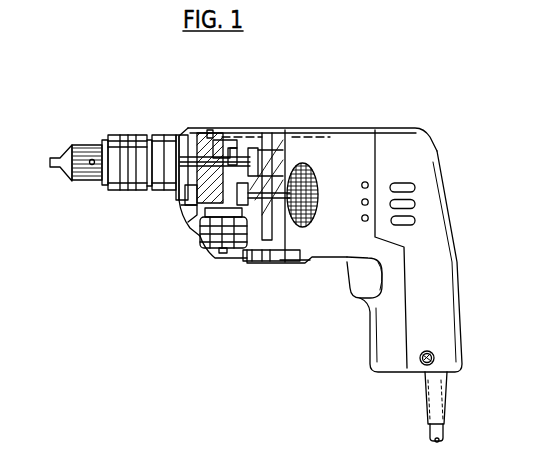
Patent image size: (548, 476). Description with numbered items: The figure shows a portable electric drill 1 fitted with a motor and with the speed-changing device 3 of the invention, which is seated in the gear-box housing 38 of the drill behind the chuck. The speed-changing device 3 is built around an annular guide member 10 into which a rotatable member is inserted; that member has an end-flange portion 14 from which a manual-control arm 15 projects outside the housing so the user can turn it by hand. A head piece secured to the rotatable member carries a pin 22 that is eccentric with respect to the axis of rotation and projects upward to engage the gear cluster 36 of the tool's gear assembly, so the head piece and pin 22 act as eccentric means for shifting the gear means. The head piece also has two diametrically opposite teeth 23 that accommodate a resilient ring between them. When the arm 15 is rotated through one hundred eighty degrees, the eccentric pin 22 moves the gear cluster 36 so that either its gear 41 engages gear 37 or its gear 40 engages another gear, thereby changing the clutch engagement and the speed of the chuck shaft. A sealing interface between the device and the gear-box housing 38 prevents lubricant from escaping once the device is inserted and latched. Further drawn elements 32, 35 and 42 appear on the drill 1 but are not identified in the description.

The portable electric drill 1 is at (441, 152).
The speed-changing device 3 is at (208, 262).
The annular guide member 10 is at (203, 238).
The end-flange portion 14 is at (212, 247).
The manual-control arm 15 is at (222, 252).
The pin 22 is at (250, 135).
The teeth 23 is at (200, 227).
The vent grille 32 is at (289, 172).
The chuck housing nose 35 is at (186, 134).
The gear cluster 36 is at (210, 125).
The gear 37 is at (277, 222).
The gear-box housing 38 is at (181, 212).
The gear 40 is at (200, 132).
The gear 41 is at (237, 150).
The clutch member 42 is at (222, 132).